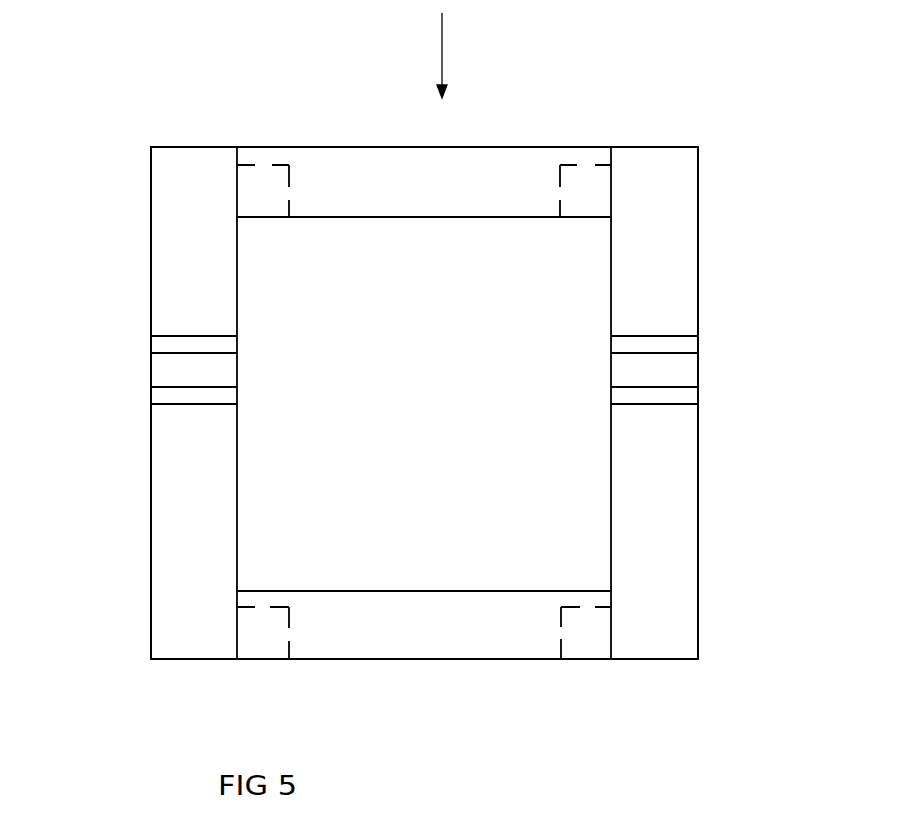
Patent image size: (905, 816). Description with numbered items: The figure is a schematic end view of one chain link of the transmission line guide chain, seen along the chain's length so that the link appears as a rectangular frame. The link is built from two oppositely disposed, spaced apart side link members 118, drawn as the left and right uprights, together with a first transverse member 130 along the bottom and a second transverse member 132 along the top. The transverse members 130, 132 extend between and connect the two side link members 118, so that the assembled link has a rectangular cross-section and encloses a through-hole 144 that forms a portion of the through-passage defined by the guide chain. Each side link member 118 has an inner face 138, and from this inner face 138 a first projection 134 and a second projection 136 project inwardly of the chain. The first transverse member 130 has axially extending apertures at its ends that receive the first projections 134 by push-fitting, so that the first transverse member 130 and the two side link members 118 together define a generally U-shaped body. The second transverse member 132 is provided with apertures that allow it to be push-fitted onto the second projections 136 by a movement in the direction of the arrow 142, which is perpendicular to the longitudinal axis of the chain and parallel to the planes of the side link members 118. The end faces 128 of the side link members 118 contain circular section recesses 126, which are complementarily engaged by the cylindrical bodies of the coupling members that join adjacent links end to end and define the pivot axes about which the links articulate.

The arrow 142 is at (422, 53).
The side link member 118 is at (152, 283).
The inner face 138 is at (237, 487).
The second transverse member 132 is at (428, 148).
The first transverse member 130 is at (408, 659).
The through-hole 144 is at (426, 398).
The end face 128 is at (202, 182).
The recess 126 is at (168, 370).
The second projection 136 is at (272, 165).
The first projection 134 is at (253, 625).